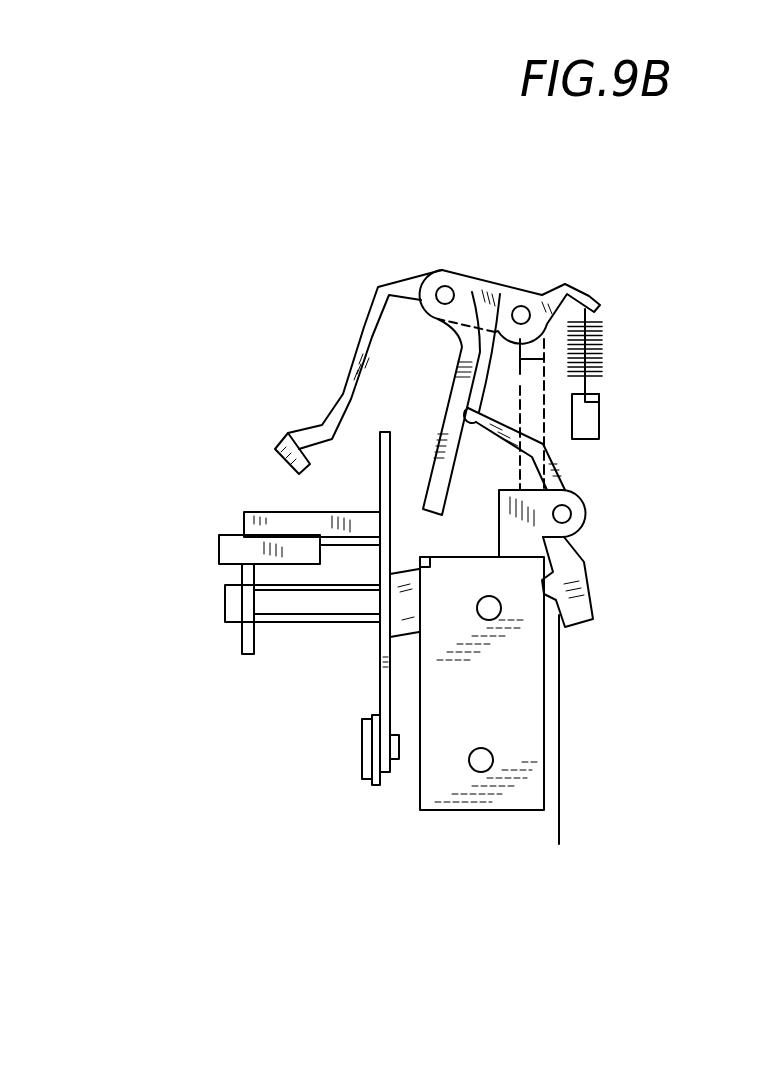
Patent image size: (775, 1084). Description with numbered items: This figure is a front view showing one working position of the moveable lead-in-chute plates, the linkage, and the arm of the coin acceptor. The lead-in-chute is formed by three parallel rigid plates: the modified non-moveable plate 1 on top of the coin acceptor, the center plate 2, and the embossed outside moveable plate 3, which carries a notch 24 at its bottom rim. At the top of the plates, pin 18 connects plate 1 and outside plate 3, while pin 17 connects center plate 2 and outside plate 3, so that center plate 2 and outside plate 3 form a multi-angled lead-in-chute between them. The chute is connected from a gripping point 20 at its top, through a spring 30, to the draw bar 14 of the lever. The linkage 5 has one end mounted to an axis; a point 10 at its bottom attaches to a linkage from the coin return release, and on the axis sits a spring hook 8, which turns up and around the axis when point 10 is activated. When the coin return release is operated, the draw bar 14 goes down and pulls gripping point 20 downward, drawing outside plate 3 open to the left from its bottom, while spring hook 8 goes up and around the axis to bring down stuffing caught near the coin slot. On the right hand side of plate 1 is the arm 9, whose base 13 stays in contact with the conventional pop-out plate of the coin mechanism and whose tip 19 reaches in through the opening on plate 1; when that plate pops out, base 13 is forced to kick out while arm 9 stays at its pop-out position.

The non-moveable plate 1 is at (502, 697).
The center plate 2 is at (445, 401).
The outside moveable plate 3 is at (362, 312).
The linkage 5 is at (235, 548).
The spring hook 8 is at (378, 463).
The arm 9 is at (570, 550).
The point 10 is at (297, 610).
The base 13 is at (566, 627).
The draw bar 14 is at (588, 398).
The pin 17 is at (450, 285).
The pin 18 is at (523, 300).
The tip 19 is at (510, 345).
The gripping point 20 is at (593, 291).
The notch 24 is at (296, 441).
The spring 30 is at (598, 343).